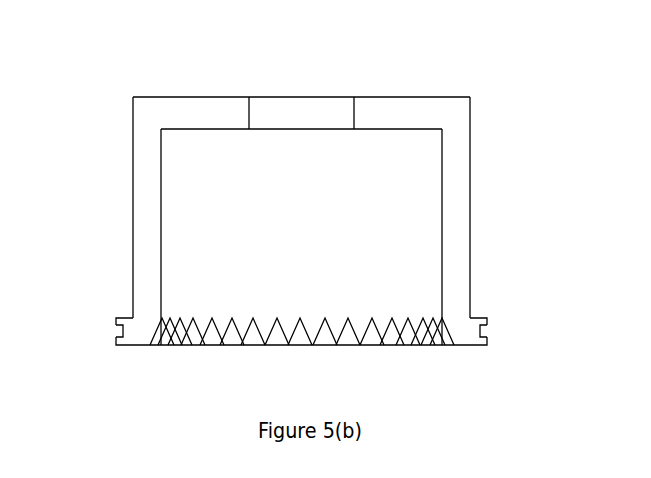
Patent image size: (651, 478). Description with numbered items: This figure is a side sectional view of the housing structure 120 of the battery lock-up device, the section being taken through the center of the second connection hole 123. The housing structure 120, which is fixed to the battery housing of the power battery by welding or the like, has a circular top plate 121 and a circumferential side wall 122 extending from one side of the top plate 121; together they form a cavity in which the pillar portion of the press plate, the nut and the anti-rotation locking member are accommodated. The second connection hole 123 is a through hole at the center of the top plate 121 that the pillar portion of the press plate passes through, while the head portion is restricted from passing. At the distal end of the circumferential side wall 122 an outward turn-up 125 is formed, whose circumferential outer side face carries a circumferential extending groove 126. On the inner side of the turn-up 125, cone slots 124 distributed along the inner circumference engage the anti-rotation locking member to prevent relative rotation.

The housing structure 120 is at (306, 214).
The top plate 121 is at (441, 81).
The circumferential side wall 122 is at (148, 220).
The second connection hole 123 is at (318, 117).
The cone slots 124 is at (393, 343).
The outward turn-up 125 is at (478, 318).
The circumferential extending groove 126 is at (482, 332).